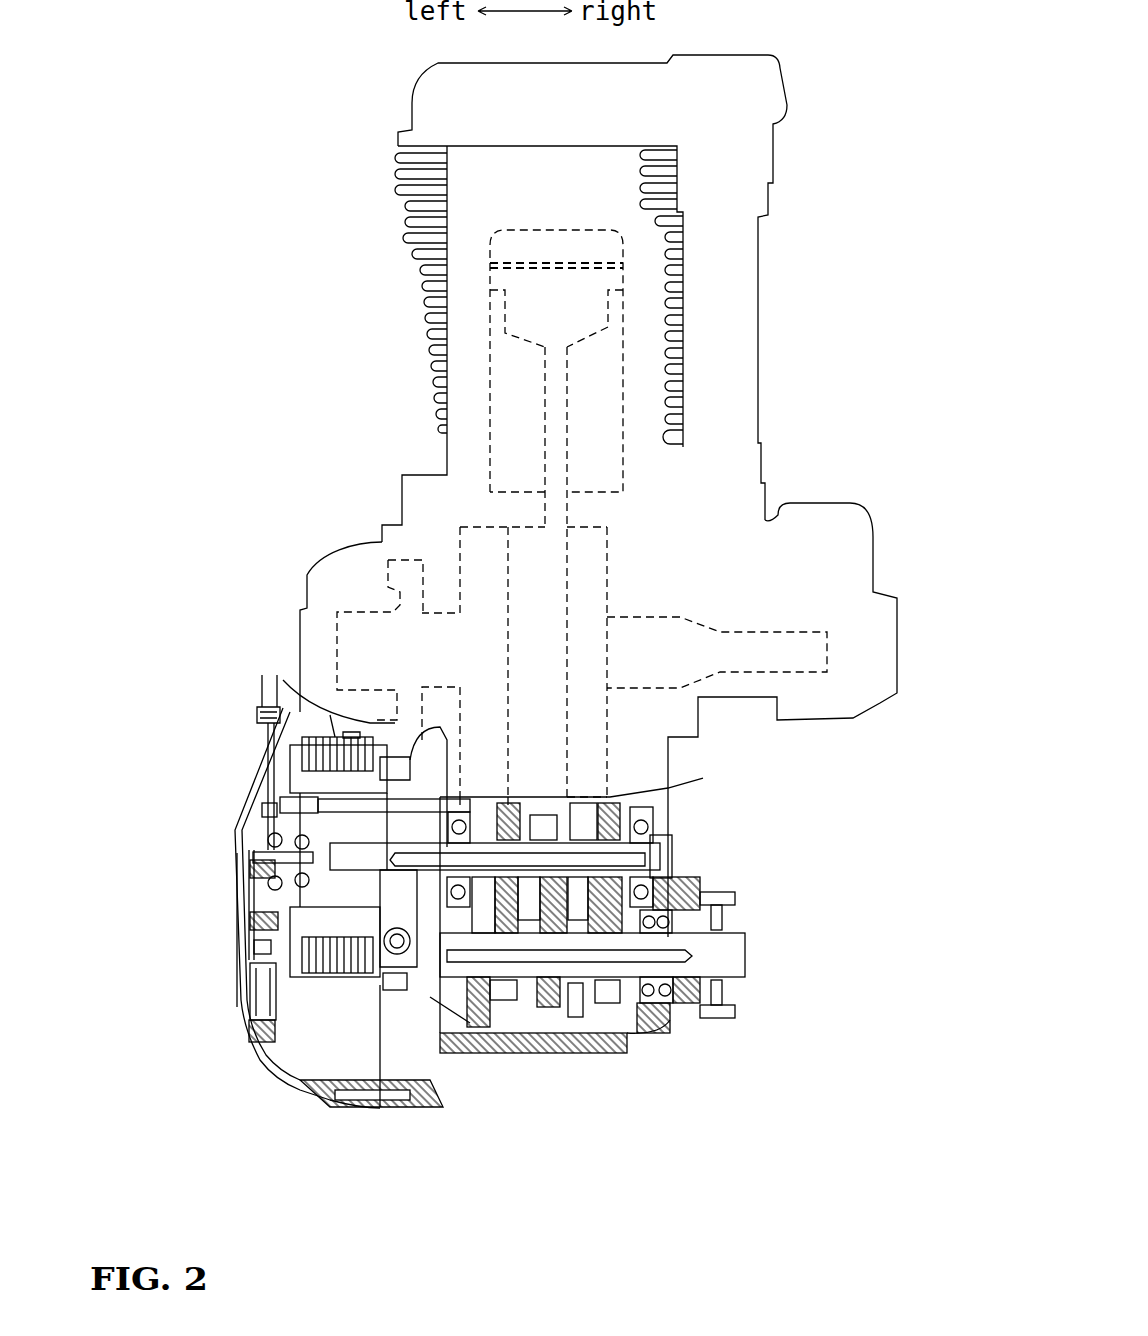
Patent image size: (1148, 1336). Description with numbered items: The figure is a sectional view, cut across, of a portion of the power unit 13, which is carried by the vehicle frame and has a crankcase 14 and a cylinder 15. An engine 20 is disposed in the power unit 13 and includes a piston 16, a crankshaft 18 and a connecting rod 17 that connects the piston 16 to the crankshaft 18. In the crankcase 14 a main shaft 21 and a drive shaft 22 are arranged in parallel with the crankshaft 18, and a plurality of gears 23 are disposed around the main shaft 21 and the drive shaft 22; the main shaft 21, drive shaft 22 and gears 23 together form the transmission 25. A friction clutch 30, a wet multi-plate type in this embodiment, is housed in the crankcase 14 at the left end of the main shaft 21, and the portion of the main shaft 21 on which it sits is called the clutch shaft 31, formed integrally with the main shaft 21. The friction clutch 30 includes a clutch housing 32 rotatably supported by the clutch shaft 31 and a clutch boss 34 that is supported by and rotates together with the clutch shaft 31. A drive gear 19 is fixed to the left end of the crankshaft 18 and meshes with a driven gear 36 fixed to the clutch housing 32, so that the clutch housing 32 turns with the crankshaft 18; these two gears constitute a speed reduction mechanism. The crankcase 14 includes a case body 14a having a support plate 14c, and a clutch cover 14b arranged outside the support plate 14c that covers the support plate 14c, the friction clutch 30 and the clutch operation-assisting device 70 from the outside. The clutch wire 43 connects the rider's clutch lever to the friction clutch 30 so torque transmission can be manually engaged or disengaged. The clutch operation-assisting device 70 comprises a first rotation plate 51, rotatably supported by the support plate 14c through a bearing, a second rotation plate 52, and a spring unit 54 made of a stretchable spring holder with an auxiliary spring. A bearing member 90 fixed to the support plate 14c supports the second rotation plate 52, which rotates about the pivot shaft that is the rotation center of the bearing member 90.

The power unit 13 is at (333, 274).
The crankcase 14 is at (302, 578).
The case body 14a is at (290, 1085).
The clutch cover 14b is at (243, 975).
The support plate 14c is at (273, 790).
The cylinder 15 is at (425, 315).
The piston 16 is at (623, 331).
The connecting rod 17 is at (593, 458).
The crankshaft 18 is at (642, 617).
The drive gear 19 is at (387, 573).
The engine 20 is at (632, 388).
The main shaft 21 is at (670, 853).
The drive shaft 22 is at (597, 1003).
The gears 23 is at (548, 800).
The transmission 25 is at (640, 947).
The friction clutch 30 is at (347, 693).
The clutch shaft 31 is at (342, 985).
The clutch housing 32 is at (370, 738).
The clutch boss 34 is at (349, 705).
The driven gear 36 is at (412, 748).
The clutch wire 43 is at (265, 683).
The first rotation plate 51 is at (243, 885).
The second rotation plate 52 is at (255, 942).
The spring unit 54 is at (243, 1000).
The clutch operation-assisting device 70 is at (253, 807).
The bearing member 90 is at (245, 910).